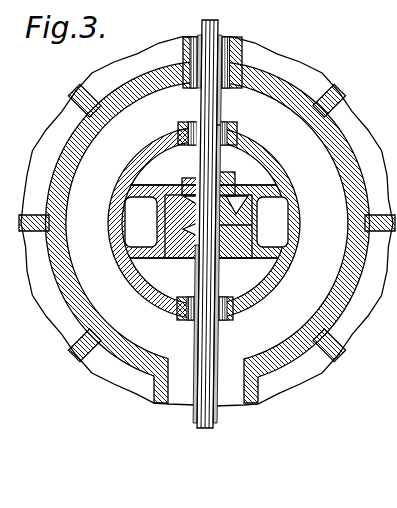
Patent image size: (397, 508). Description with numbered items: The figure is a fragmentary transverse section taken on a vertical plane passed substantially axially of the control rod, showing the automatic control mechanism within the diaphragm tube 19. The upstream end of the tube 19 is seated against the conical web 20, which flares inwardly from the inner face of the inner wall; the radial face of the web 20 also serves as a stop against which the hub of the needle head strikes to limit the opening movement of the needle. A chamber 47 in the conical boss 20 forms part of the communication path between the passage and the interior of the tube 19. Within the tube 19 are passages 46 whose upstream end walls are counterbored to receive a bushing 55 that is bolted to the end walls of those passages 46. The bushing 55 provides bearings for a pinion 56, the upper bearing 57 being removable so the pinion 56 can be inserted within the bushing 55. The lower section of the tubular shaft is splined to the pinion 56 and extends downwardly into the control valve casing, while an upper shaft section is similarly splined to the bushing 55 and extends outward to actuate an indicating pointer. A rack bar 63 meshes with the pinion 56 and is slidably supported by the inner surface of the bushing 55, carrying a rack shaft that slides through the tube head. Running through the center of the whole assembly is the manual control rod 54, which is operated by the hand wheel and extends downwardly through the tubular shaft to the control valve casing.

The tube 19 is at (157, 137).
The conical web 20 is at (84, 297).
The passages 46 is at (206, 222).
The chamber 47 is at (138, 332).
The rod 54 is at (219, 224).
The bushing 55 is at (238, 186).
The pinion 56 is at (221, 212).
The upper bearing 57 is at (191, 180).
The rack bar 63 is at (224, 233).